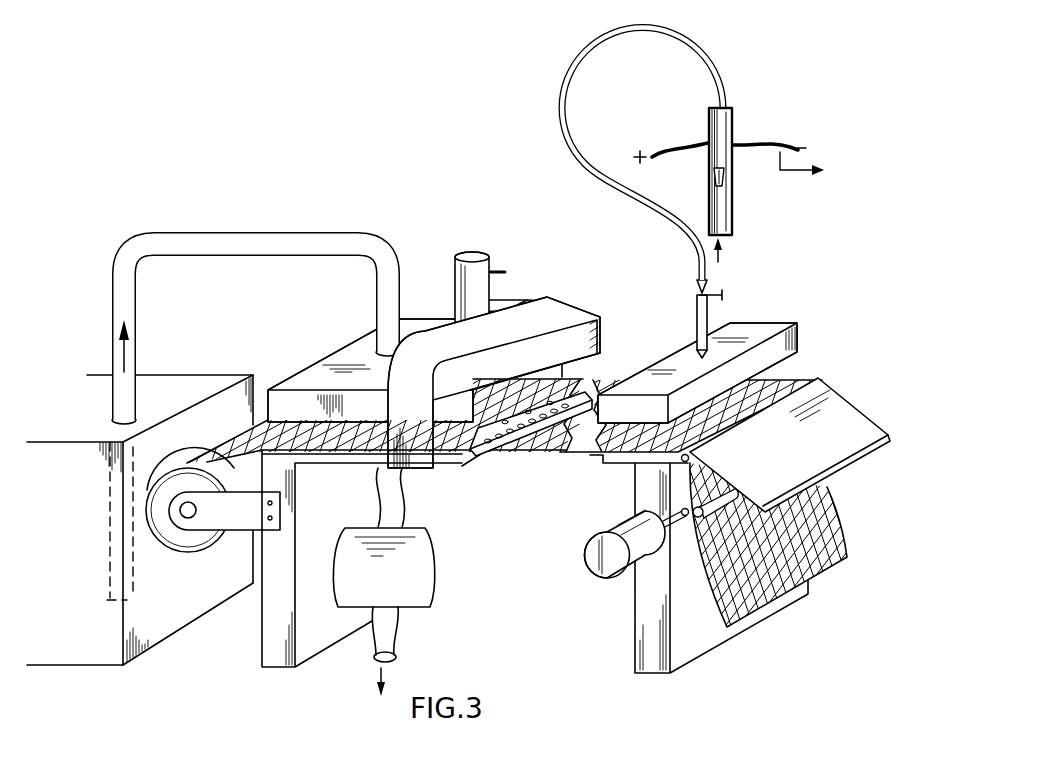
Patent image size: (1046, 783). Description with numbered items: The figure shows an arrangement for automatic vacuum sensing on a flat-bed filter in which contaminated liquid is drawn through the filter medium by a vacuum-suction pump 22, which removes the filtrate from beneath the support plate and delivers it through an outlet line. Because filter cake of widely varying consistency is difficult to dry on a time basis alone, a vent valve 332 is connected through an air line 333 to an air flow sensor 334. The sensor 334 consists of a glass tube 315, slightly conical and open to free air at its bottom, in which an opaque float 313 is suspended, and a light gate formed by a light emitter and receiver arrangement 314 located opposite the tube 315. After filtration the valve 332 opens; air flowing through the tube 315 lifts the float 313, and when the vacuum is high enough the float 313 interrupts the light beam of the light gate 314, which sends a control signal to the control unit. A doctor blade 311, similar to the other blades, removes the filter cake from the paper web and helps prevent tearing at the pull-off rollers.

The vacuum-suction pump 22 is at (425, 558).
The doctor blade 311 is at (825, 406).
The opaque float 313 is at (732, 177).
The light emitter and light receiver arrangement 314 is at (753, 143).
The glass tube 315 is at (720, 220).
The vent valve 332 is at (698, 295).
The air line 333 is at (559, 113).
The air flow sensor 334 is at (708, 135).